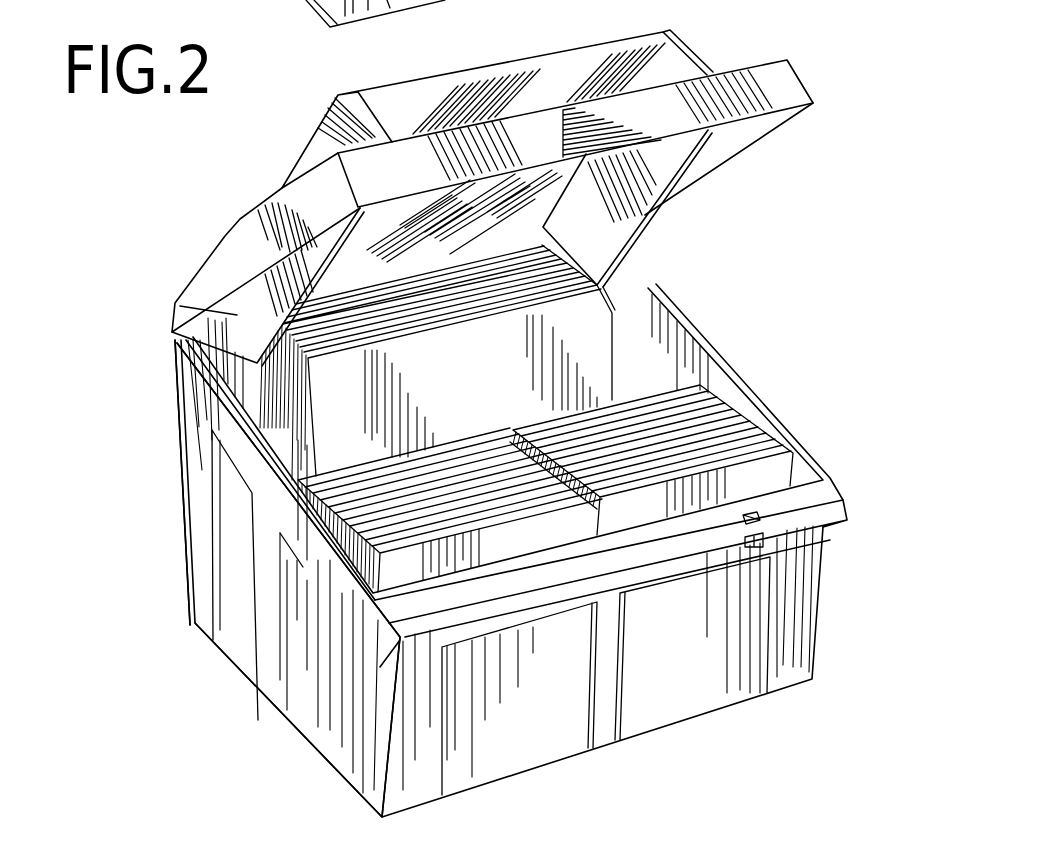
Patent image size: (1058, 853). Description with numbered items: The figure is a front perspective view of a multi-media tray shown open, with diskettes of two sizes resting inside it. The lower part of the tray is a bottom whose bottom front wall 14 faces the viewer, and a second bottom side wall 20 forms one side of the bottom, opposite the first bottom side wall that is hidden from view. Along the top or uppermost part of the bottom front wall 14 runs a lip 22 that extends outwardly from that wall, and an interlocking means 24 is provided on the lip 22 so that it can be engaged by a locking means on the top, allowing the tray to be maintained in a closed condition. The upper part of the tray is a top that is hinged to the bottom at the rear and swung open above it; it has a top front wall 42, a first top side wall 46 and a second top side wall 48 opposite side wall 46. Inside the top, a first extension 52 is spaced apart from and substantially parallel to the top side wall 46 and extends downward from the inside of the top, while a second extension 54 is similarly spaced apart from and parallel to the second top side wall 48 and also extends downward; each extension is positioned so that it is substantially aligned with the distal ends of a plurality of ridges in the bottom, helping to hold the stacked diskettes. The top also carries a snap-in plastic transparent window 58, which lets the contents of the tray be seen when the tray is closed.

The bottom front wall 14 is at (692, 692).
The second bottom side wall 20 is at (230, 592).
The lip 22 is at (818, 507).
The interlocking means 24 is at (760, 543).
The top front wall 42 is at (765, 92).
The first top side wall 46 is at (752, 133).
The second top side wall 48 is at (235, 247).
The first extension 52 is at (615, 207).
The second extension 54 is at (257, 312).
The snap-in plastic transparent window 58 is at (558, 90).